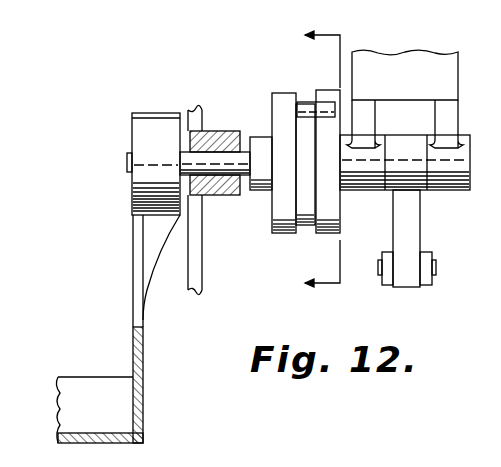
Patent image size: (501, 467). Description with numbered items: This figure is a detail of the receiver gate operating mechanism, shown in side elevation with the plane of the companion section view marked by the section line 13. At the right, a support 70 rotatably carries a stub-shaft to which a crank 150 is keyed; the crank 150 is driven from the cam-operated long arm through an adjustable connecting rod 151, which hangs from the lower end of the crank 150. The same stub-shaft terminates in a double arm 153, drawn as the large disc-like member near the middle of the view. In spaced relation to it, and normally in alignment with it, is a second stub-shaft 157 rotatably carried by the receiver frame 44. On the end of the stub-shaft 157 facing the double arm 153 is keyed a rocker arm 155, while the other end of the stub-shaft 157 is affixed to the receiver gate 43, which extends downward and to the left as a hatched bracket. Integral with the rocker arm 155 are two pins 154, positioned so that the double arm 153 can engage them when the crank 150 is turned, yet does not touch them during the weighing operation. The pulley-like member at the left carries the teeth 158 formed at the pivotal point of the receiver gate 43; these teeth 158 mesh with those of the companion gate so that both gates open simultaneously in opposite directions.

The section line 13- 13 is at (308, 162).
The receiver gate 43 is at (145, 400).
The receiver frame 44 is at (200, 294).
The support 70 is at (424, 66).
The crank 150 is at (416, 231).
The adjustable connecting rod 151 is at (428, 283).
The double arm 153 is at (333, 210).
The pins 154 is at (305, 104).
The rocker arm 155 is at (277, 212).
The stub-shaft 157 is at (221, 157).
The teeth 158 is at (148, 112).